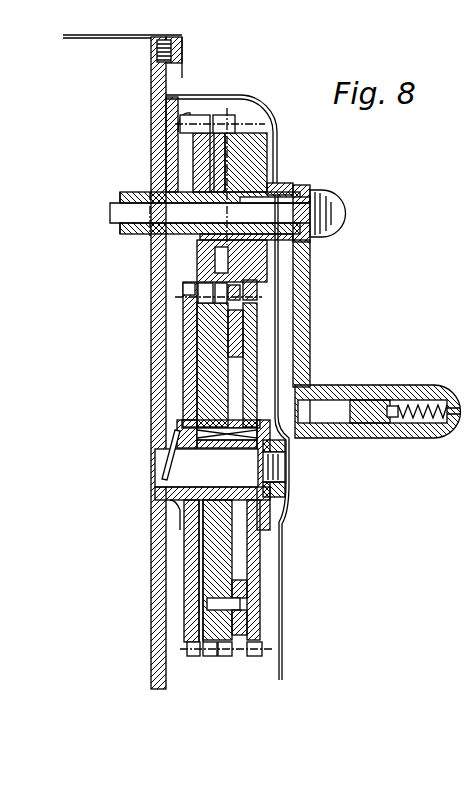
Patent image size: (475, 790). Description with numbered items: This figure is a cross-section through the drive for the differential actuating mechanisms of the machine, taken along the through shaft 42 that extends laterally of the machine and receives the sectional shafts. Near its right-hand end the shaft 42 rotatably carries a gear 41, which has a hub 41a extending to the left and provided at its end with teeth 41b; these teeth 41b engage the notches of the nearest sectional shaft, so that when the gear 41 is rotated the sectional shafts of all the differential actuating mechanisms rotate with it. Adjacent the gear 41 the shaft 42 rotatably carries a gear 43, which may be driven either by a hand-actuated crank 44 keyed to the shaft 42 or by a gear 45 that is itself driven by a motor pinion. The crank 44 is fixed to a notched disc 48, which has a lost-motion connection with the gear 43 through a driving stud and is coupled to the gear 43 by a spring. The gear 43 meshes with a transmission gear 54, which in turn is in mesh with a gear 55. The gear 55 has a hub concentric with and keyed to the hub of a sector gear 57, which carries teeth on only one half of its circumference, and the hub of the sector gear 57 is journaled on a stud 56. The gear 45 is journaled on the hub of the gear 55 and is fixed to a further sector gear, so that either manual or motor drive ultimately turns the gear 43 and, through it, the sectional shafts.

The gear 41 is at (188, 122).
The hub 41a is at (138, 193).
The teeth 41b is at (110, 217).
The through shaft 42 is at (170, 214).
The gear 43 is at (217, 120).
The hand-actuated crank 44 is at (302, 314).
The gear 45 is at (227, 656).
The notched disc 48 is at (258, 160).
The transmission gear 54 is at (262, 115).
The gear 55 is at (257, 568).
The stud 56 is at (162, 453).
The sector gear 57 is at (197, 552).